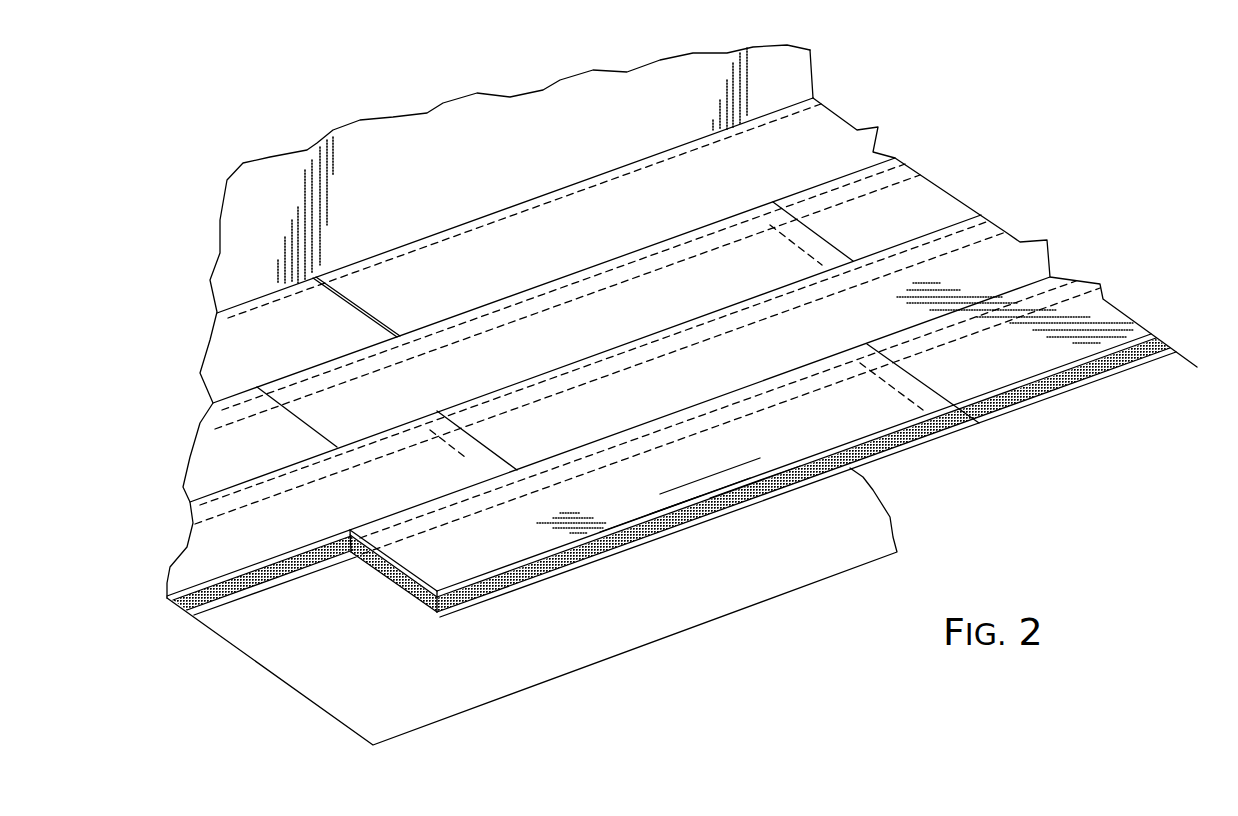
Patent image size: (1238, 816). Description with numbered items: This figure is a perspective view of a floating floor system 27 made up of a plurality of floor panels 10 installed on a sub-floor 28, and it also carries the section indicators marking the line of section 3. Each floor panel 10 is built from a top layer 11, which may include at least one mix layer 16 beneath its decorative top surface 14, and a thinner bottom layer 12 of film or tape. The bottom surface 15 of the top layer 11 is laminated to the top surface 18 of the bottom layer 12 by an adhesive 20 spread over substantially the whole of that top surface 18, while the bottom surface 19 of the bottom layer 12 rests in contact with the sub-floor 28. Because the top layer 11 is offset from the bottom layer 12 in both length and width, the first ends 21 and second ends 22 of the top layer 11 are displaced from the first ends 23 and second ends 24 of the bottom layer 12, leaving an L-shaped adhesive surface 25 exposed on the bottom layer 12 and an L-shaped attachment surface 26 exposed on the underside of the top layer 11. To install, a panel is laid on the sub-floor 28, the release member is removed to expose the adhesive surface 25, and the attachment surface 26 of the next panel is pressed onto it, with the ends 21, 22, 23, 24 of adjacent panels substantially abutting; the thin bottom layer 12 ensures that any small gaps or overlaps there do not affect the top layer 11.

The section line 3- 3 is at (460, 195).
The floor panel 10 is at (232, 308).
The top layer 11 is at (700, 488).
The bottom layer 12 is at (587, 563).
The top surface 14 is at (787, 453).
The bottom surface 15 is at (753, 483).
The mix layer 16 is at (957, 420).
The top surface 18 is at (637, 540).
The bottom surface 19 is at (687, 527).
The adhesive 20 is at (480, 600).
The first ends 21 is at (413, 583).
The second ends 22 is at (440, 500).
The first ends 23 is at (383, 587).
The second ends 24 is at (523, 567).
The adhesive surface 25 is at (450, 610).
The attachment surface 26 is at (350, 550).
The floating floor system 27 is at (853, 87).
The sub-floor 28 is at (617, 638).